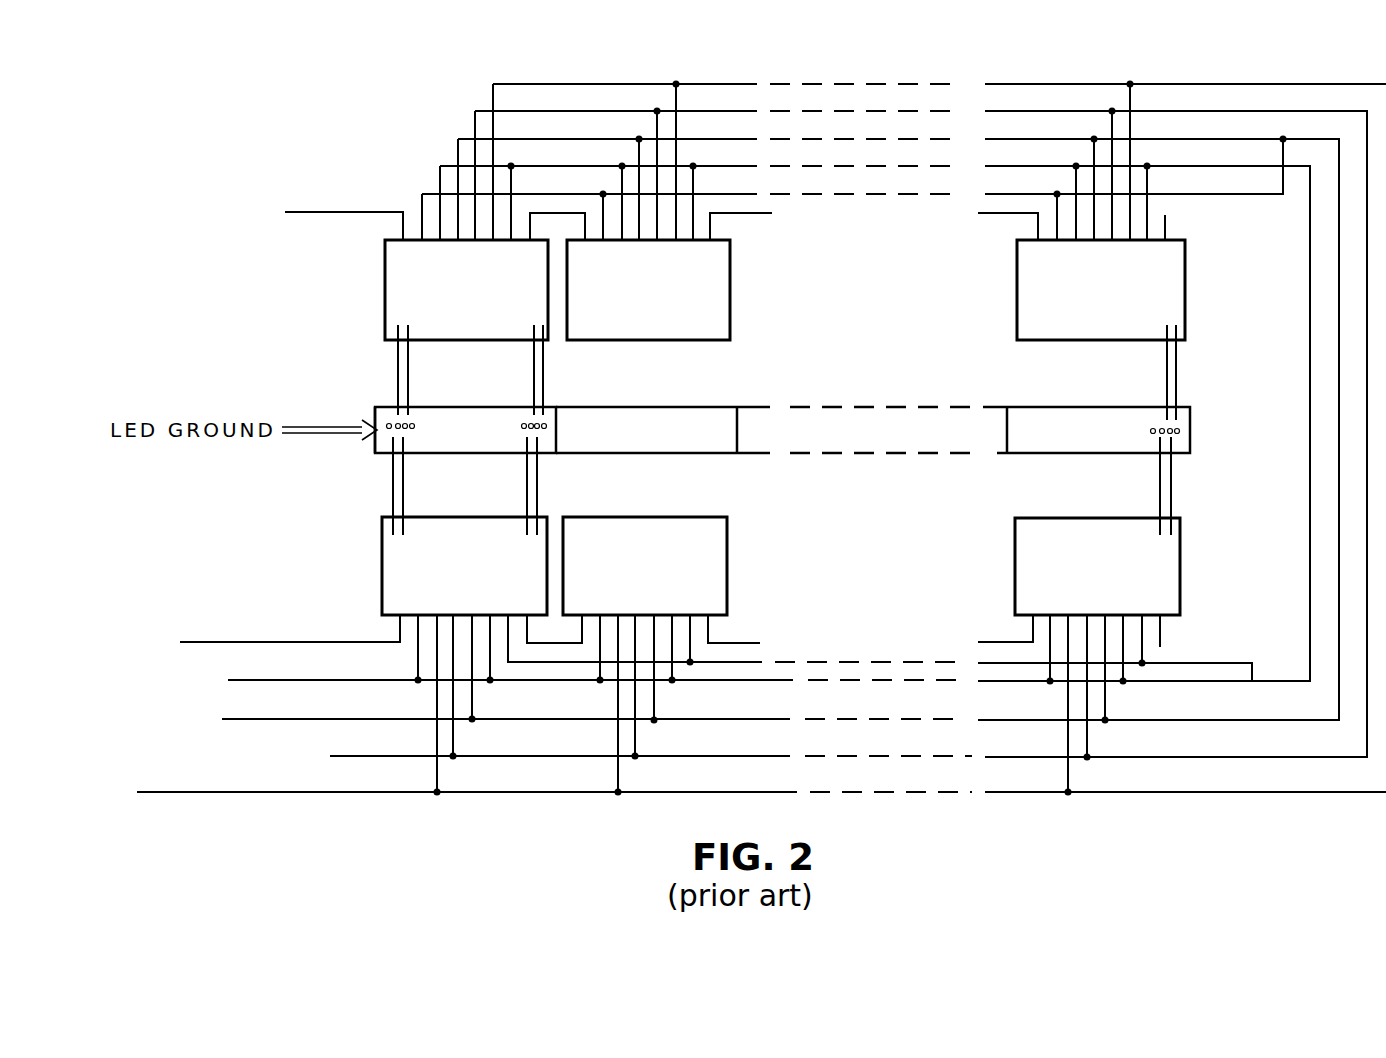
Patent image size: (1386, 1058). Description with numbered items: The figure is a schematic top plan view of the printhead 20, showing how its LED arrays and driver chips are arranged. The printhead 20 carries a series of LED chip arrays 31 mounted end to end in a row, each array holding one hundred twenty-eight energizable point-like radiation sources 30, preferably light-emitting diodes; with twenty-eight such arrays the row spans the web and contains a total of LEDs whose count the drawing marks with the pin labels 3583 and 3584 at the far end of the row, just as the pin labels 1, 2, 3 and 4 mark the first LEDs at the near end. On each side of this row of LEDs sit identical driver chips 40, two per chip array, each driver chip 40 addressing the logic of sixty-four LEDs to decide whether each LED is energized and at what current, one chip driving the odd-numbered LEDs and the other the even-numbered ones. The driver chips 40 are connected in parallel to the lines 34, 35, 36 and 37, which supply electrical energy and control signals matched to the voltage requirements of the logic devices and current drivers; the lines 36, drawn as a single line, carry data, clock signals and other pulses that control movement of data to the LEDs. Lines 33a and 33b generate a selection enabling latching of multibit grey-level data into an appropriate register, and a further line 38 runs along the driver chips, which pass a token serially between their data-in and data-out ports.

The printhead 20 is at (360, 88).
The energizable point-like radiation sources 30 is at (388, 426).
The LED chip arrays 31 is at (475, 406).
The line 33a is at (320, 642).
The line 33b is at (661, 206).
The line 34 is at (318, 680).
The line 35 is at (331, 719).
The lines 36 is at (379, 749).
The line 37 is at (337, 792).
The R/LB select line 38 is at (407, 661).
The driver chips 40 is at (385, 270).
The pin 1 is at (387, 486).
The pin 2 is at (389, 370).
The pin 3 is at (414, 486).
The pin 4 is at (416, 370).
The pin 3583 is at (1200, 486).
The pin 3584 is at (1207, 372).